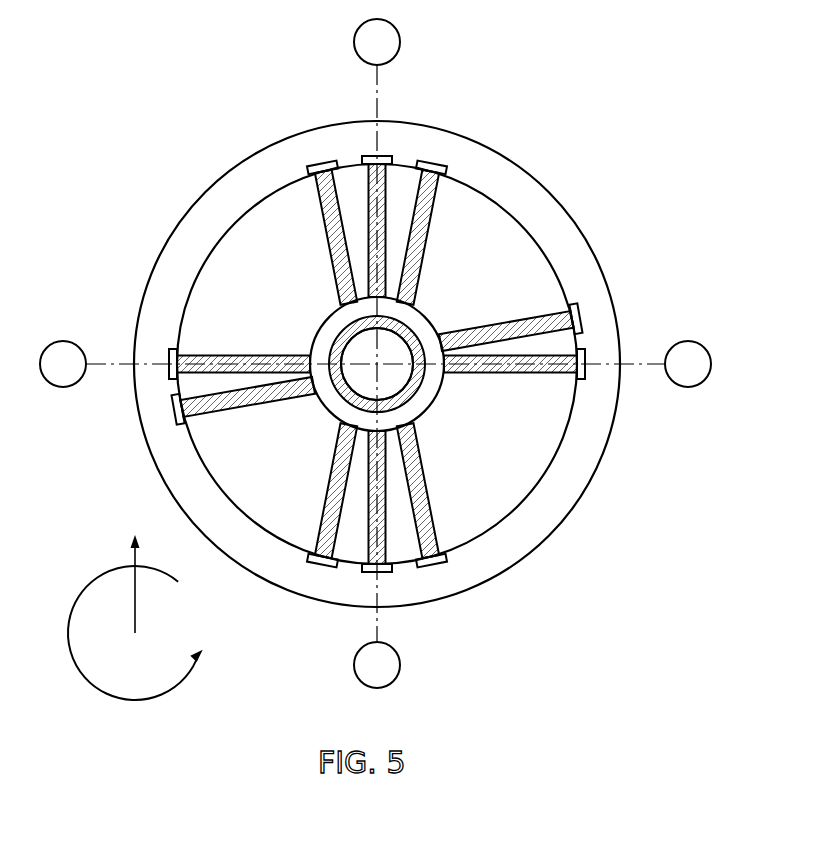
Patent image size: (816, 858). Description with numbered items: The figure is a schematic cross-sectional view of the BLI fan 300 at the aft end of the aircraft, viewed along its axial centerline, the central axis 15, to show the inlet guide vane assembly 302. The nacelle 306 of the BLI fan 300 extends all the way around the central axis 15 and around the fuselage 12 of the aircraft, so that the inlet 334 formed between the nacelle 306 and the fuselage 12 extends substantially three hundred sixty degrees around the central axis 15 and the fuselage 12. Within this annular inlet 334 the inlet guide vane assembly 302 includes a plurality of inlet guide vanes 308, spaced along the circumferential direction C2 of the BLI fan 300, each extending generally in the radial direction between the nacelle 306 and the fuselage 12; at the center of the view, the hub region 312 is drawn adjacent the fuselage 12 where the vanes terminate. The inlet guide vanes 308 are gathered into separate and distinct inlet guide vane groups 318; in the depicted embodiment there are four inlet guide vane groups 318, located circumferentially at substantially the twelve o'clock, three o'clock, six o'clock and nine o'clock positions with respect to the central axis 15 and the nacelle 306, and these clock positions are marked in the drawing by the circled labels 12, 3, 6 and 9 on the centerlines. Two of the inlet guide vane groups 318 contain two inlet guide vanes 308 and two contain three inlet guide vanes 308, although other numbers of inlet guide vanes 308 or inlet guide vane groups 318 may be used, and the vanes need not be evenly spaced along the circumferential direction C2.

The BLI fan 300 is at (577, 147).
The inlet guide vane assembly 302 is at (497, 262).
The nacelle 306 is at (285, 156).
The inlet guide vanes 308 is at (337, 185).
The central bore 312 is at (385, 352).
The central axis 15 is at (397, 325).
The inlet guide vane groups 318 is at (300, 228).
The inlet 334 is at (558, 411).
The circumferential direction C2 is at (170, 692).
The fuselage 12 is at (377, 42).
The 3 o'clock position 3 is at (688, 364).
The 6 o'clock position 6 is at (377, 665).
The 9 o'clock position 9 is at (63, 364).